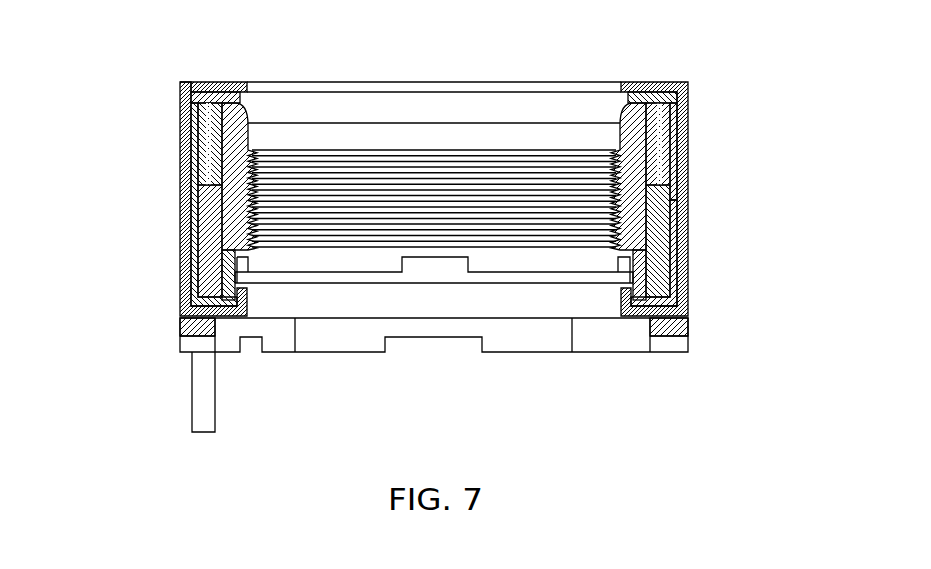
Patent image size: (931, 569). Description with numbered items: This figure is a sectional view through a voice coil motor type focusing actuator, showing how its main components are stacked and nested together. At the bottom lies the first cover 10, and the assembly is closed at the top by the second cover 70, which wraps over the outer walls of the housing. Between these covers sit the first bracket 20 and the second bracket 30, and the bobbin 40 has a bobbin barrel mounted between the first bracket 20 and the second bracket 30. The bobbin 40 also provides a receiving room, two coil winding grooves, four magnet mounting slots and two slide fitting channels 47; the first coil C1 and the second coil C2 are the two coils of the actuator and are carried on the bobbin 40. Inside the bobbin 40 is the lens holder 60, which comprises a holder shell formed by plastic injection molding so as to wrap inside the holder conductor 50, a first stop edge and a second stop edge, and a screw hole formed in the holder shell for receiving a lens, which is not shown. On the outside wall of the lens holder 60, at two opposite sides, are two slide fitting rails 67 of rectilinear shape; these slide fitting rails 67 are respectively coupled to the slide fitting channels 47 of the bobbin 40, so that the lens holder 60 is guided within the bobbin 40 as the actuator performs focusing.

The first cover 10 is at (524, 360).
The first bracket 20 is at (182, 262).
The second bracket 30 is at (182, 120).
The bobbin 40 is at (190, 195).
The slide fitting channels 47 is at (182, 168).
The holder conductor 50 is at (660, 217).
The lens holder 60 is at (620, 138).
The slide fitting rails 67 is at (221, 82).
The second cover 70 is at (661, 80).
The first coil C1 is at (667, 265).
The second coil C2 is at (678, 145).